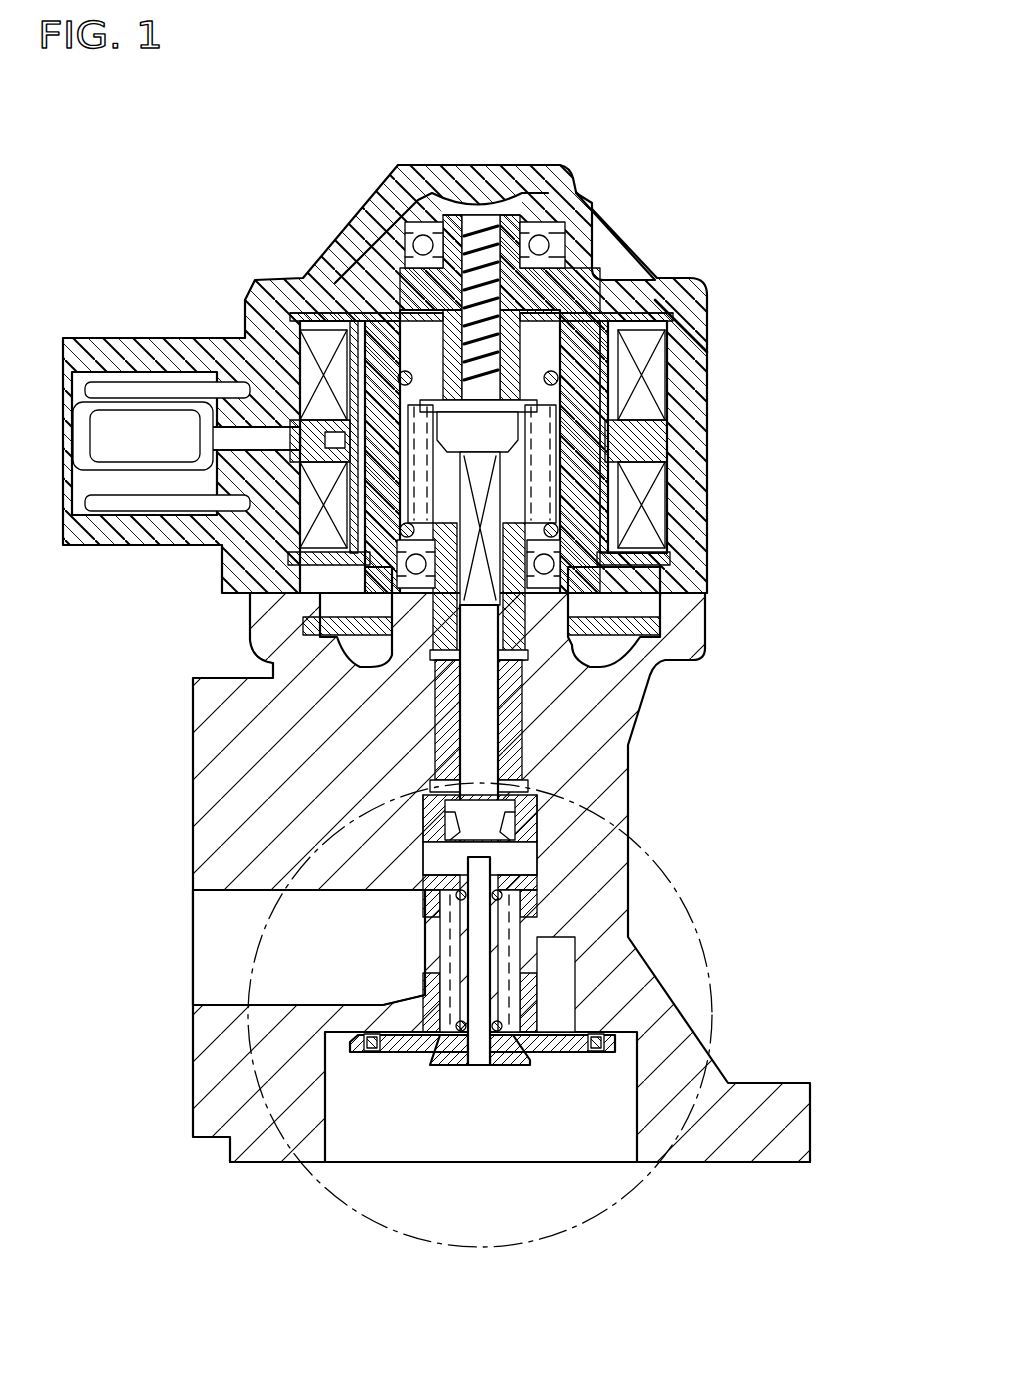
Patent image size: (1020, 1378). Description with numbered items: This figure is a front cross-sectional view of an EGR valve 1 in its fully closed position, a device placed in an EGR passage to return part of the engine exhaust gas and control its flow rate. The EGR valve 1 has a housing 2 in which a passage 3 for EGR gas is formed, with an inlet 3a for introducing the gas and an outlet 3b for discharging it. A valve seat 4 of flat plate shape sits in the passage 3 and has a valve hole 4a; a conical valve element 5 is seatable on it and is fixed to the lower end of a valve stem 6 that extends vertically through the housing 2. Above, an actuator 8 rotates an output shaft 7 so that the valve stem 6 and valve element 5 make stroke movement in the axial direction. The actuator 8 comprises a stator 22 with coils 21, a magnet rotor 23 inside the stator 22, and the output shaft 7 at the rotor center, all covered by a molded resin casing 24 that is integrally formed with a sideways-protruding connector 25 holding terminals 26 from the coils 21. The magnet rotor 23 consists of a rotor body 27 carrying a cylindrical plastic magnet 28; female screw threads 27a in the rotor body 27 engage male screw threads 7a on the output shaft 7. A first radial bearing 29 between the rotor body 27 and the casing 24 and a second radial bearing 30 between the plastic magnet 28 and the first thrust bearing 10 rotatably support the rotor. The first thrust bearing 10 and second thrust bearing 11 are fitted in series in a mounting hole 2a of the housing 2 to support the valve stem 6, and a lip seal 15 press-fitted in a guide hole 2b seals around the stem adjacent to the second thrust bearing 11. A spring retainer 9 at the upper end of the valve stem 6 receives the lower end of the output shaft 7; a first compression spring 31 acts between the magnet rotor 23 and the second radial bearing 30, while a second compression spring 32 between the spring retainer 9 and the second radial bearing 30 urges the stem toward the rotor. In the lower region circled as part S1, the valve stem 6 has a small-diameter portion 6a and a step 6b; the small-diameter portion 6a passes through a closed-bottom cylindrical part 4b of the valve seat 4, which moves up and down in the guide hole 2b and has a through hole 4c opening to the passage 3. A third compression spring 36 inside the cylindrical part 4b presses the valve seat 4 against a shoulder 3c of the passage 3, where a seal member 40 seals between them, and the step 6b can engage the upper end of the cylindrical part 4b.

The EGR valve 1 is at (610, 140).
The housing 2 is at (707, 630).
The mounting hole 2a is at (440, 710).
The guide hole 2b is at (425, 858).
The passage 3 is at (310, 965).
The inlet 3a is at (325, 1140).
The outlet 3b is at (205, 898).
The shoulder 3c is at (620, 1040).
The valve seat 4 is at (393, 1050).
The valve hole 4a is at (457, 1052).
The cylindrical part 4b is at (537, 1005).
The through hole 4c is at (537, 915).
The valve element 5 is at (507, 1055).
The valve stem 6 is at (440, 790).
The small-diameter portion 6a is at (560, 955).
The step 6b is at (540, 857).
The output shaft 7 is at (481, 213).
The male screw threads 7a is at (530, 283).
The actuator 8 is at (709, 365).
The spring retainer 9 is at (540, 422).
The first thrust bearing 10 is at (497, 690).
The second thrust bearing 11 is at (515, 717).
The lip seal 15 is at (530, 800).
The coils 21 is at (657, 397).
The stator 22 is at (687, 327).
The magnet rotor 23 is at (230, 202).
The casing 24 is at (697, 462).
The connector 25 is at (200, 340).
The terminals 26 is at (105, 463).
The rotor body 27 is at (440, 293).
The female screw threads 27a is at (533, 313).
The plastic magnet 28 is at (380, 345).
The first radial bearing 29 is at (540, 250).
The second radial bearing 30 is at (560, 582).
The first compression spring 31 is at (310, 565).
The second compression spring 32 is at (395, 485).
The third compression spring 36 is at (540, 885).
The seal member 40 is at (365, 1035).
The part S1 is at (530, 1245).